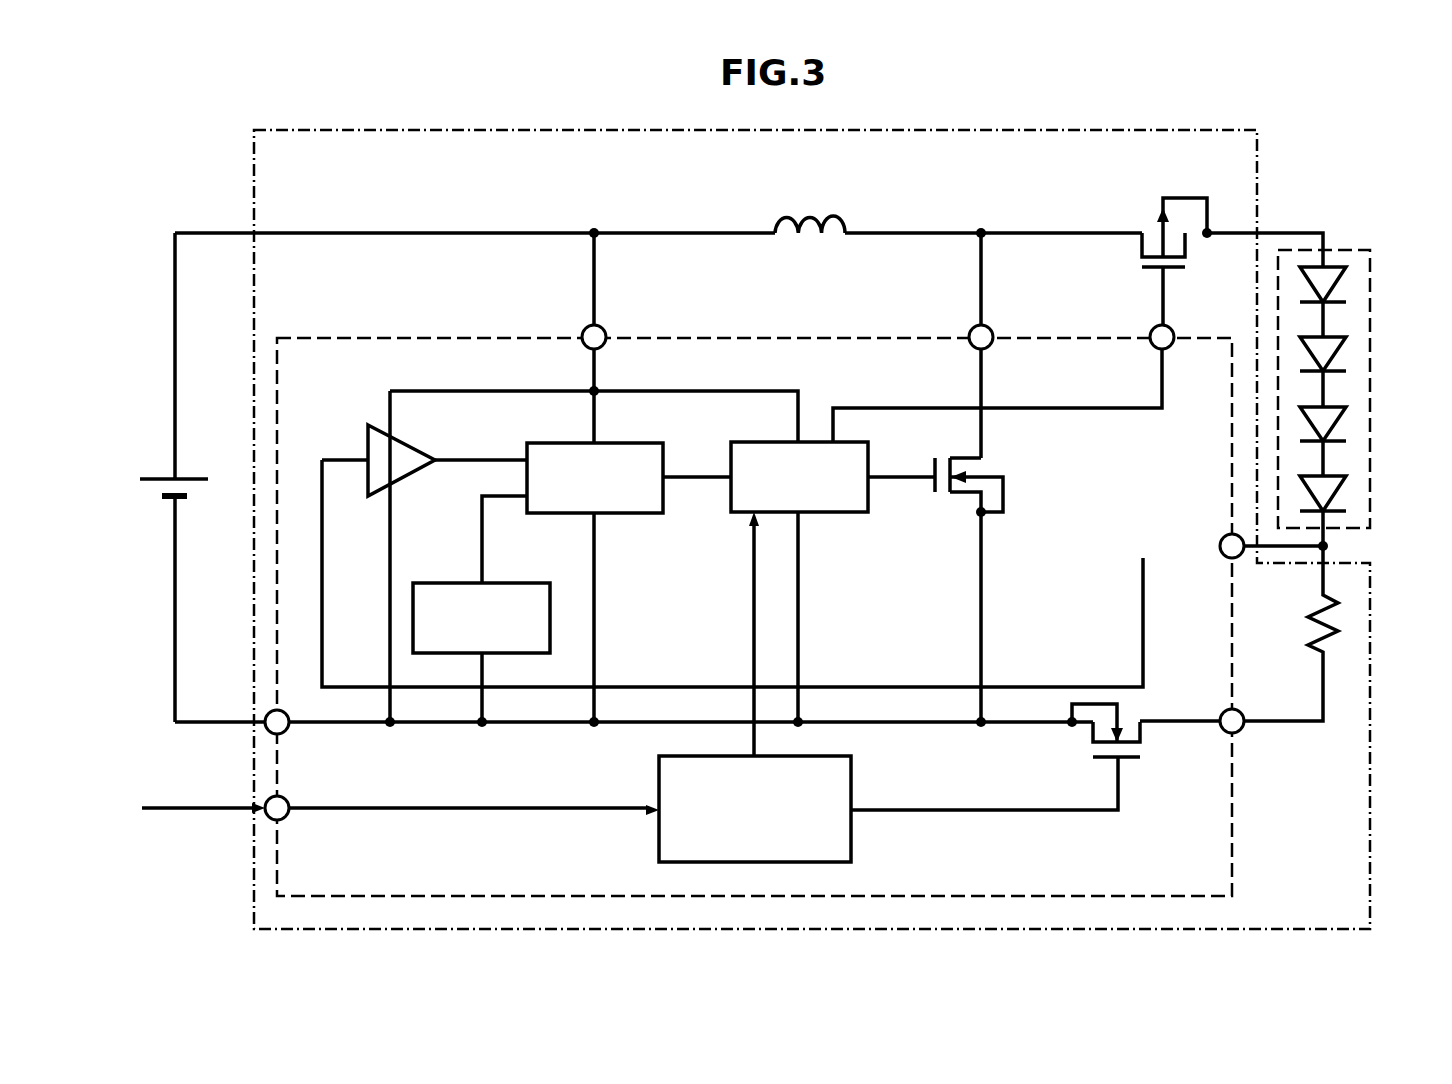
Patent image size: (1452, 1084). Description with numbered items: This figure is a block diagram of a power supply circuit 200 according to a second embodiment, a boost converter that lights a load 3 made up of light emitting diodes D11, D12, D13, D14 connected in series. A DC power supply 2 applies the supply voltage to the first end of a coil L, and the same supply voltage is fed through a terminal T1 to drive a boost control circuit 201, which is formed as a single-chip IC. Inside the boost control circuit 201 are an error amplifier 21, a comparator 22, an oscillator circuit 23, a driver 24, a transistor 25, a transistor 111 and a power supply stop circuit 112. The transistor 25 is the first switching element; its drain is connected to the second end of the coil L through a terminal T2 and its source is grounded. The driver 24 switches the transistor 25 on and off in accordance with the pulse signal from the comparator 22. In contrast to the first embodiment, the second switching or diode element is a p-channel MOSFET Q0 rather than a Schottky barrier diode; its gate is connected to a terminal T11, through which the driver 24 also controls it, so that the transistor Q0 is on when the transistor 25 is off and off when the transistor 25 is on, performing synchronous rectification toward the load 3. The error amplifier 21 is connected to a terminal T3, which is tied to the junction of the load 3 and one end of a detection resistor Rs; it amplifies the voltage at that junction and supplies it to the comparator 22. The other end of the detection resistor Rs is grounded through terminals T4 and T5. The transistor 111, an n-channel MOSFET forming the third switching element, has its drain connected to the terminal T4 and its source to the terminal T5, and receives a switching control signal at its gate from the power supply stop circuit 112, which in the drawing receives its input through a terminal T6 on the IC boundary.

The power supply circuit 200 is at (272, 129).
The boost control circuit 201 is at (377, 337).
The DC power supply 2 is at (157, 475).
The load 3 is at (1364, 378).
The light emitting diode D11 is at (1337, 286).
The light emitting diode D12 is at (1337, 353).
The light emitting diode D13 is at (1337, 424).
The light emitting diode D14 is at (1337, 493).
The coil L is at (810, 195).
The p-channel MOSFET Q0 is at (1174, 240).
The detection resistor Rs is at (1345, 617).
The error amplifier 21 is at (368, 430).
The comparator 22 is at (547, 442).
The oscillator circuit 23 is at (457, 582).
The driver 24 is at (773, 440).
The transistor 25 is at (960, 493).
The transistor 111 is at (1093, 733).
The power supply stop circuit 112 is at (852, 778).
The terminal T1 is at (575, 321).
The terminal T2 is at (962, 321).
The terminal T3 is at (1247, 567).
The terminal T4 is at (1252, 733).
The terminal T5 is at (246, 707).
The terminal T6 is at (246, 794).
The terminal T11 is at (1140, 321).